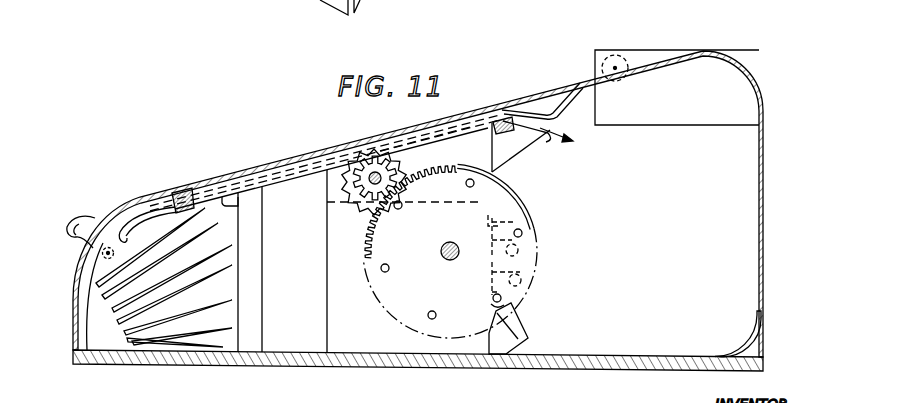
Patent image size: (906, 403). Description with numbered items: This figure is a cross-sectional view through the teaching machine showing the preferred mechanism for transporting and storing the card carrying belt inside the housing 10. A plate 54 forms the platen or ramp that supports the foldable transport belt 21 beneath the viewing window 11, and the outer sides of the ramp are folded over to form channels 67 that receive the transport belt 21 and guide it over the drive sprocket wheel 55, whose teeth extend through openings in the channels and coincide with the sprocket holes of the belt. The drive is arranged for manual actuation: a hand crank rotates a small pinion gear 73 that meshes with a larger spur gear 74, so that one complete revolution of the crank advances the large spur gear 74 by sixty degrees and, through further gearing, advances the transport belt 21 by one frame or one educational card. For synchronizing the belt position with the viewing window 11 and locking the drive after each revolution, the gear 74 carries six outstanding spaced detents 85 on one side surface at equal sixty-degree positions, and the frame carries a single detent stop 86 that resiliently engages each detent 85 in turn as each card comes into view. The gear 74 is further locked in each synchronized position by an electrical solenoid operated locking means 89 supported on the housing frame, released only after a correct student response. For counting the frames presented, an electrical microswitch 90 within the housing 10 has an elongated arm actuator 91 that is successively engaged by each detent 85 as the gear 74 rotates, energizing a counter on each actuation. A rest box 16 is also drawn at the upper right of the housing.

The housing 10 is at (764, 160).
The viewing window 11 is at (268, 165).
The rest box 16 is at (594, 58).
The transport belt 21 is at (127, 336).
The plate 54 is at (431, 134).
The drive sprocket wheel 55 is at (343, 198).
The channels 67 is at (533, 106).
The pinion gear 73 is at (367, 162).
The spur gear 74 is at (431, 176).
The detents 85 is at (475, 184).
The detent stop 86 is at (527, 243).
The solenoid operated locking means 89 is at (530, 273).
The microswitch 90 is at (512, 321).
The arm actuator 91 is at (491, 298).